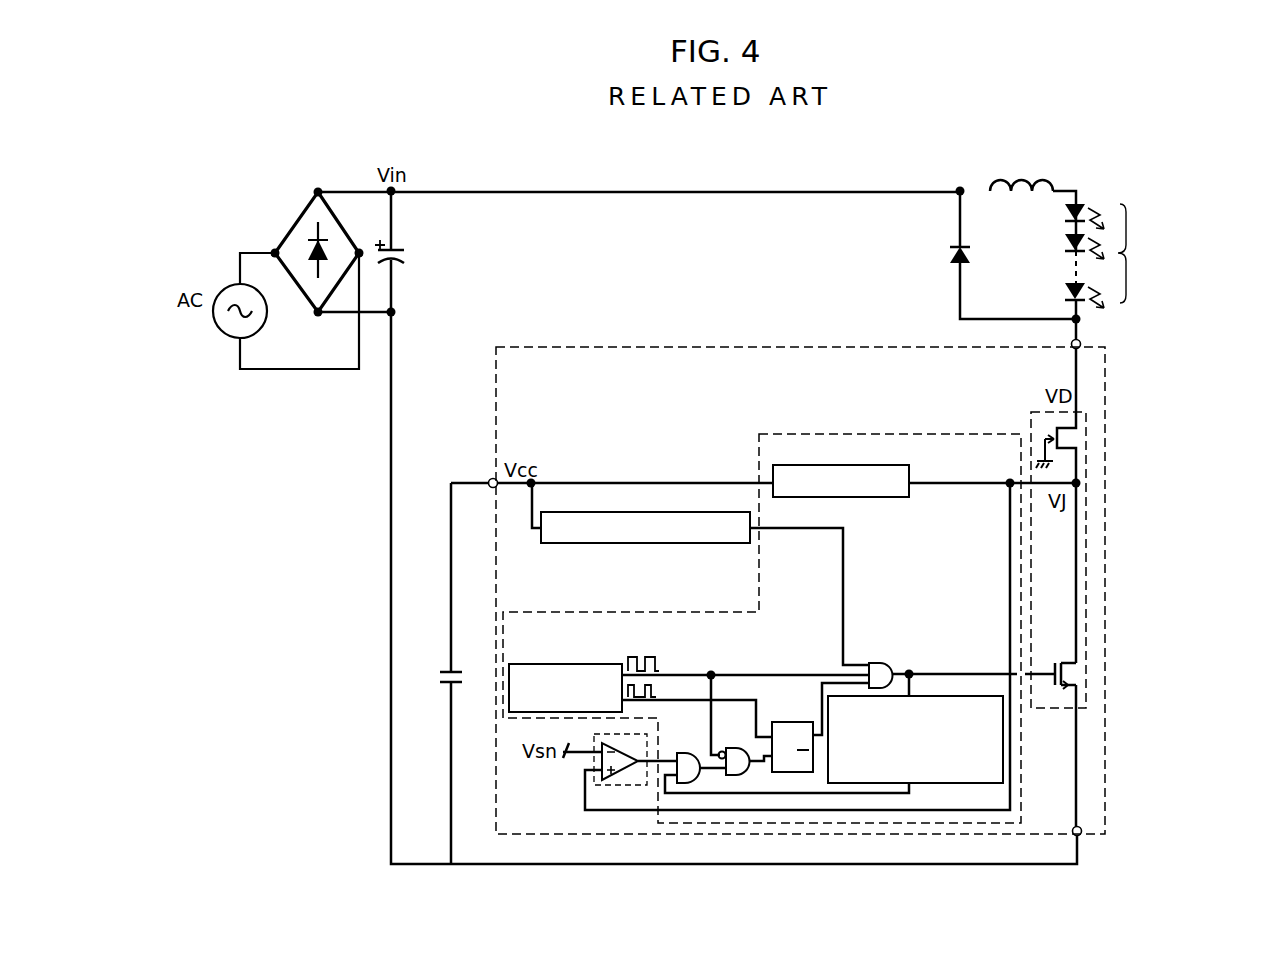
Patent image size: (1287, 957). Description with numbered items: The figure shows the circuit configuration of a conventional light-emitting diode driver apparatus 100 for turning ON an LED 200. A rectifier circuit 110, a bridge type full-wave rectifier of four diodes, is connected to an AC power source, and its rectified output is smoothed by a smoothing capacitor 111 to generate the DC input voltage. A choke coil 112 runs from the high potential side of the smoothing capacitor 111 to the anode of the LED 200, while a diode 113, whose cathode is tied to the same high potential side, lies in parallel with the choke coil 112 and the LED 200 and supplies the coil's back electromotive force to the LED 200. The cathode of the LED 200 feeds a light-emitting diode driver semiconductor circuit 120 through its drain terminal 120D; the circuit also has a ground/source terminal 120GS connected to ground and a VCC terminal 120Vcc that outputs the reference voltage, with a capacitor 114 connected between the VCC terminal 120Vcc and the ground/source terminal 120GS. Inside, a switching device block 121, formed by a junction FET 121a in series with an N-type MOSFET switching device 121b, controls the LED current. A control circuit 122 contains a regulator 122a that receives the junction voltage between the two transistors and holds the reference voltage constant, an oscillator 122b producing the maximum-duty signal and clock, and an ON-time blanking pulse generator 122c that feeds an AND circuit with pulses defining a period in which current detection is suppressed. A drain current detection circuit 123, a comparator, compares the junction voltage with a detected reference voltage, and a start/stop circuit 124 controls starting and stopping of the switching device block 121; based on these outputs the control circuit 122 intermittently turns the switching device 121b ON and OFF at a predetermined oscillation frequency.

The light-emitting diode driver apparatus 100 is at (1186, 162).
The rectifier circuit 110 is at (299, 213).
The smoothing capacitor 111 is at (402, 256).
The choke coil 112 is at (1048, 170).
The diode 113 is at (955, 254).
The capacitor 114 is at (440, 670).
The light-emitting diode driver semiconductor circuit 120 is at (585, 348).
The VCC terminal 120Vcc is at (490, 479).
The drain terminal 120D is at (1082, 338).
The ground/source terminal 120GS is at (1082, 834).
The switching device block 121 is at (1030, 424).
The junction FET 121a is at (1070, 440).
The switching device 121b is at (1068, 673).
The control circuit 122 is at (843, 433).
The regulator 122a is at (773, 463).
The oscillator 122b is at (592, 664).
The ON-time blanking pulse generator 122c is at (920, 694).
The drain current detection circuit 123 is at (592, 765).
The start/stop circuit 124 is at (625, 545).
The LED 200 is at (1117, 256).